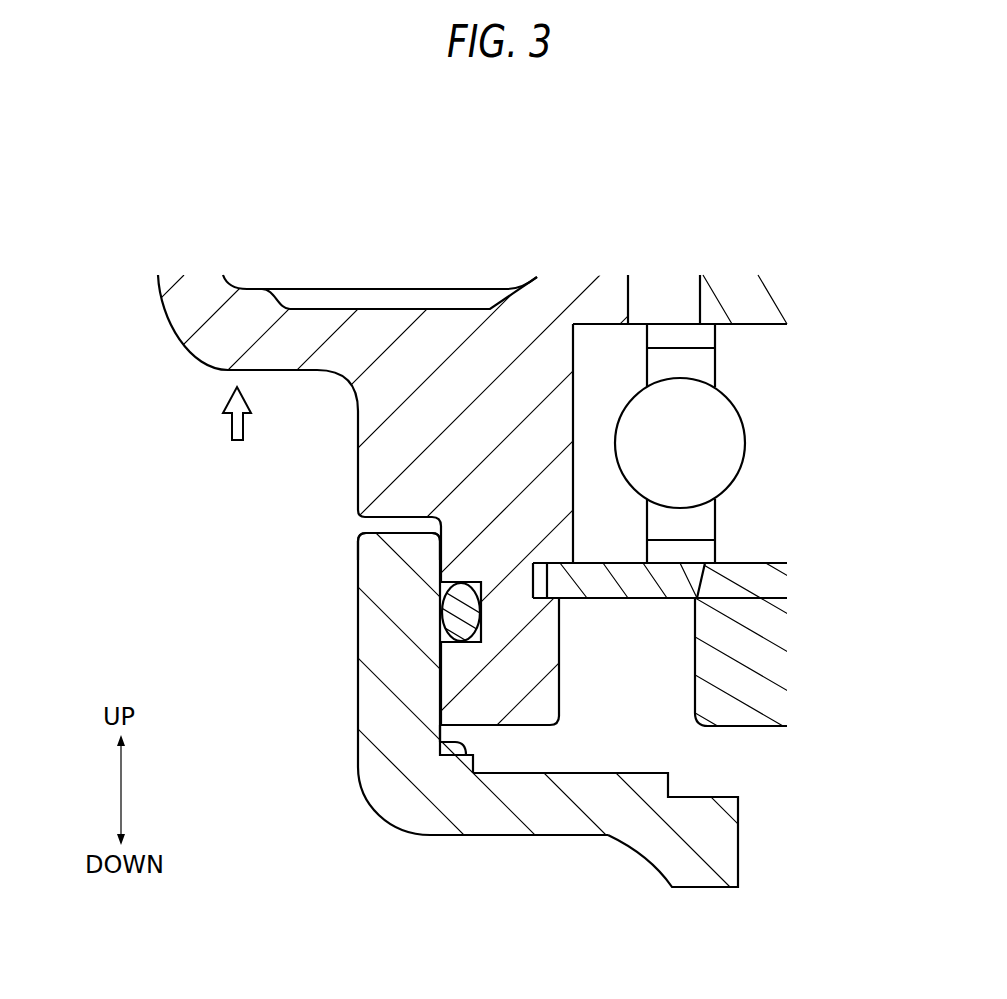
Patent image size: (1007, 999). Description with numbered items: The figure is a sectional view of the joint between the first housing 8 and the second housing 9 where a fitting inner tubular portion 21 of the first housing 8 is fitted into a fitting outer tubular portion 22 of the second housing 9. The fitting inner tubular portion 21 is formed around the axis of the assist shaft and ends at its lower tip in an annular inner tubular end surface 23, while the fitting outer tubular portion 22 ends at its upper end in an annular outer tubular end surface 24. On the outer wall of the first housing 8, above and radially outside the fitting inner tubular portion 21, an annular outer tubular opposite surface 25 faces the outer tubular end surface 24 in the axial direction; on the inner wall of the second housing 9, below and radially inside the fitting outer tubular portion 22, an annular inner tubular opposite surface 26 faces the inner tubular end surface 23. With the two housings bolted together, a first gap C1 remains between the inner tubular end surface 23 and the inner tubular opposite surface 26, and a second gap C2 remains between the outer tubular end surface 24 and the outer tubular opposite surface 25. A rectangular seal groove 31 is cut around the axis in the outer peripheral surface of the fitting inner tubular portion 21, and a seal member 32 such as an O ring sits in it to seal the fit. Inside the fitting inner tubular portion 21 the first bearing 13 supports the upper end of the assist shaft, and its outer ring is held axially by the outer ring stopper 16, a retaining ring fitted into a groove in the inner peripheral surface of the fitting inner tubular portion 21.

The first housing 8 is at (186, 356).
The second housing 9 is at (634, 851).
The first bearing 13 is at (718, 437).
The outer ring stopper 16 is at (643, 596).
The fitting inner tubular portion 21 is at (363, 778).
The fitting outer tubular portion 22 is at (375, 701).
The inner tubular end surface 23 is at (518, 727).
The outer tubular end surface 24 is at (360, 579).
The outer tubular opposite surface 25 is at (363, 474).
The inner tubular opposite surface 26 is at (472, 712).
The seal groove 31 is at (442, 636).
The seal member 32 is at (455, 610).
The first gap C1 is at (582, 727).
The second gap C2 is at (358, 532).